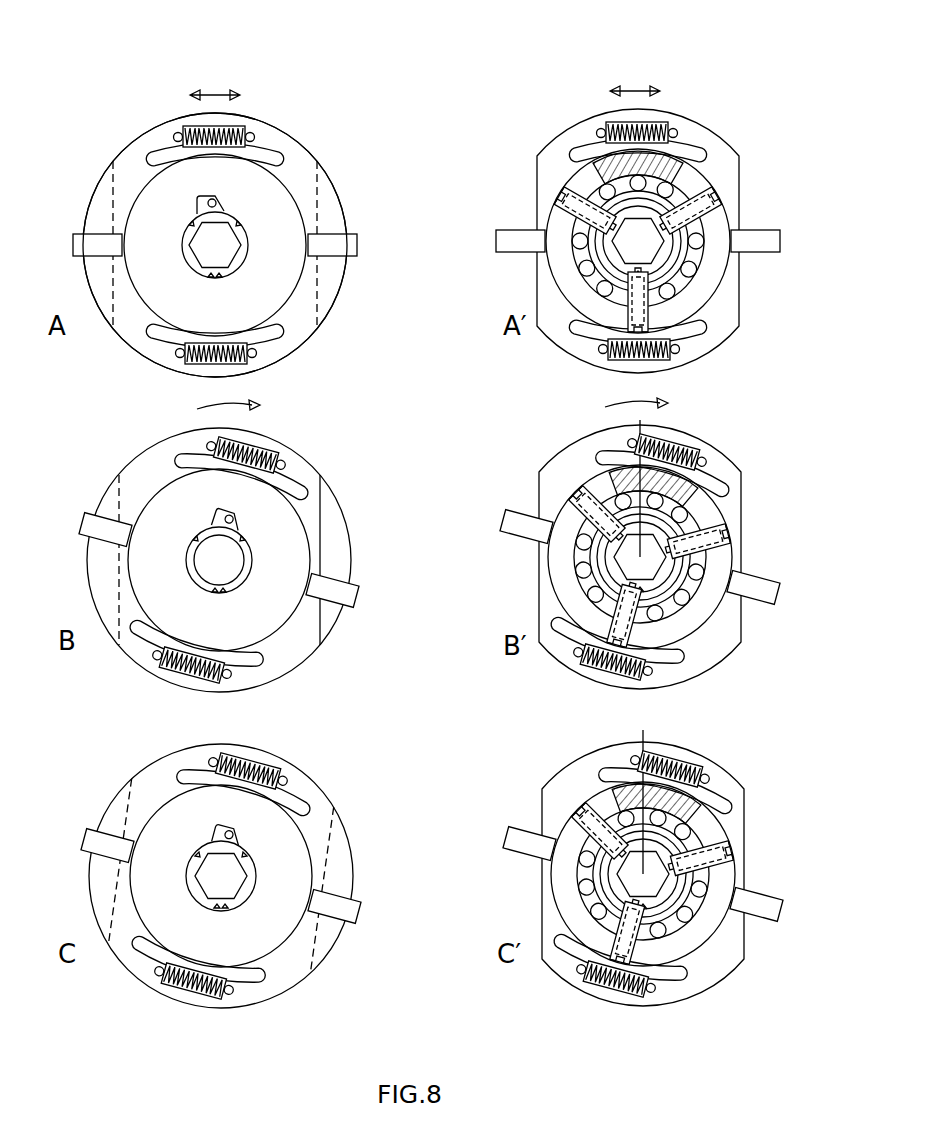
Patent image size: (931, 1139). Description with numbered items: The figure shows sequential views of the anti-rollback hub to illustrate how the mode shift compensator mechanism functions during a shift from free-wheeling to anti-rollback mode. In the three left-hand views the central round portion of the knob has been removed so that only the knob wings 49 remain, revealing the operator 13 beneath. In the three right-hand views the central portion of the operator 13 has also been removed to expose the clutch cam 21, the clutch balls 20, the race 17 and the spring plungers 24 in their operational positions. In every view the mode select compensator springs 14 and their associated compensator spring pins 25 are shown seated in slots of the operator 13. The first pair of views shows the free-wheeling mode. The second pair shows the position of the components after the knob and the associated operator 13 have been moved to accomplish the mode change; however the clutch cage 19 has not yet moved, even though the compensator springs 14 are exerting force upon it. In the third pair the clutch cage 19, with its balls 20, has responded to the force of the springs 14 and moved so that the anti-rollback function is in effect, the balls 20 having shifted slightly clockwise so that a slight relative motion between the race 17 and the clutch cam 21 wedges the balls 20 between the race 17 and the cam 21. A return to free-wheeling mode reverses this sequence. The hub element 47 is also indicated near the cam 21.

The operator 13 is at (314, 153).
The mode select compensator spring 14 is at (241, 125).
The race 17 is at (595, 173).
The clutch cage 19 is at (657, 178).
The clutch ball 20 is at (643, 178).
The clutch cam 21 is at (690, 256).
The spring plunger 24 is at (720, 191).
The compensator spring pin 25 is at (257, 132).
The hub 47 is at (674, 233).
The knob wing 49 is at (362, 231).